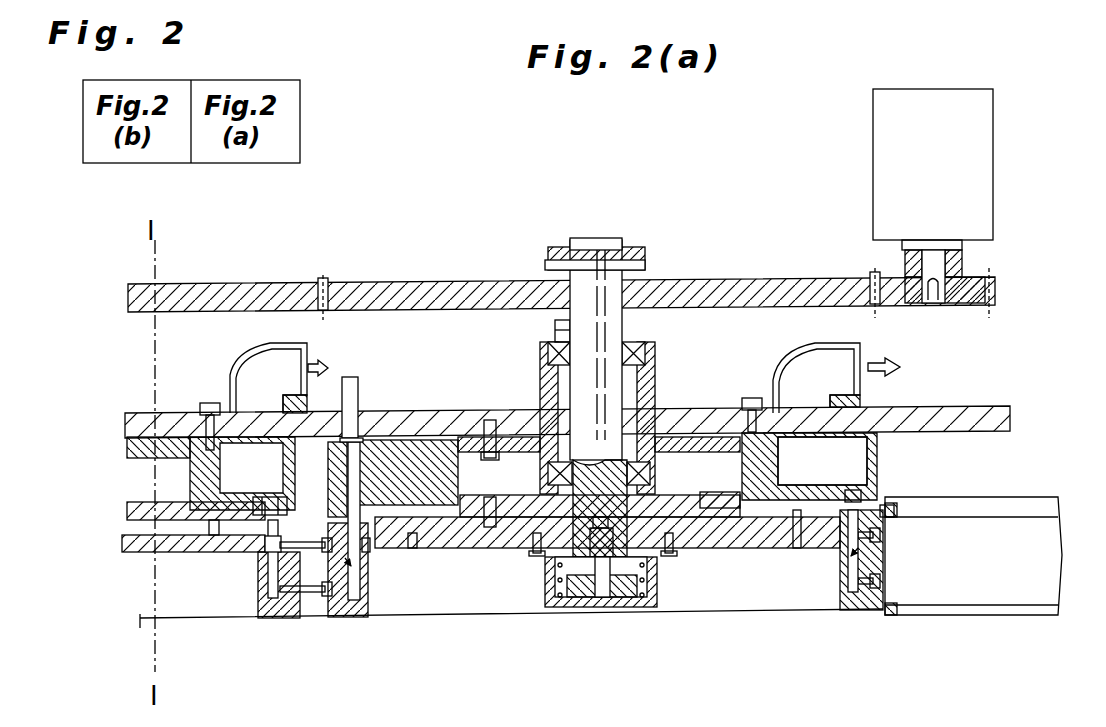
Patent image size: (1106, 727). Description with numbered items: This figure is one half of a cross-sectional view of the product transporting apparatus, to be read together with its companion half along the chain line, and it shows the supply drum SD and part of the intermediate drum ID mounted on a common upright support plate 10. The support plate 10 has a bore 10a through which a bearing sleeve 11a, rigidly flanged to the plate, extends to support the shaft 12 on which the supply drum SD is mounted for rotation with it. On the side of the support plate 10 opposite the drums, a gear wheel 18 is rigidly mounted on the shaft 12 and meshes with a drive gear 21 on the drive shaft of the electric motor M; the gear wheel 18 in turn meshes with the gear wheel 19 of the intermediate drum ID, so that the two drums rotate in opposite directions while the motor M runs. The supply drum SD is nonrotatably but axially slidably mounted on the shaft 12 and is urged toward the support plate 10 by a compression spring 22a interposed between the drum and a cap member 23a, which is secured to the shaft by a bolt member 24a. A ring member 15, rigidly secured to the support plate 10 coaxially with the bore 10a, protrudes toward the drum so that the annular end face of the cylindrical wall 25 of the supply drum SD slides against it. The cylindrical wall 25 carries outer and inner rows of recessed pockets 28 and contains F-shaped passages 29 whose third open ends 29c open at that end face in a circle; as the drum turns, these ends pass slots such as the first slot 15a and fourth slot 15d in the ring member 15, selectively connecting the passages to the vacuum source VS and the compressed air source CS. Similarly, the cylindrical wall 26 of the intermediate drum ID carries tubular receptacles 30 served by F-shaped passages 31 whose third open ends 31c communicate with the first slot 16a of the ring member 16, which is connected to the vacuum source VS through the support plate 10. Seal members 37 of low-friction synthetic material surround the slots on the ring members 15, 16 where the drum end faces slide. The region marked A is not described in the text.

The support plate 10 is at (995, 405).
The bore 10a is at (672, 412).
The bearing sleeve 11a is at (540, 355).
The shaft 12 is at (596, 242).
The ring member 15 is at (877, 450).
The first slot 15a is at (855, 487).
The fourth slot 15d is at (357, 458).
The ring member 16 is at (200, 440).
The first slot 16a is at (275, 497).
The gear wheel 18 is at (757, 282).
The gear wheel 19 is at (130, 296).
The drive gear 21 is at (975, 277).
The compression spring 22a is at (655, 595).
The cap member 23a is at (635, 612).
The bolt member 24a is at (590, 585).
The cylindrical wall 25 is at (857, 598).
The cylindrical wall 26 is at (272, 612).
The pockets 28 is at (345, 605).
The F-shaped passages 29 is at (365, 610).
The third open end 29c is at (368, 545).
The tubular receptacles 30 is at (265, 585).
The F-shaped passages 31 is at (245, 600).
The third open end 31c is at (262, 548).
The seal members 37 is at (272, 490).
The electric motor M is at (980, 170).
The intermediate drum ID is at (130, 556).
The supply drum SD is at (468, 552).
The vacuum source VS is at (317, 362).
The compressed air source CS is at (350, 370).
The gap A is at (342, 562).